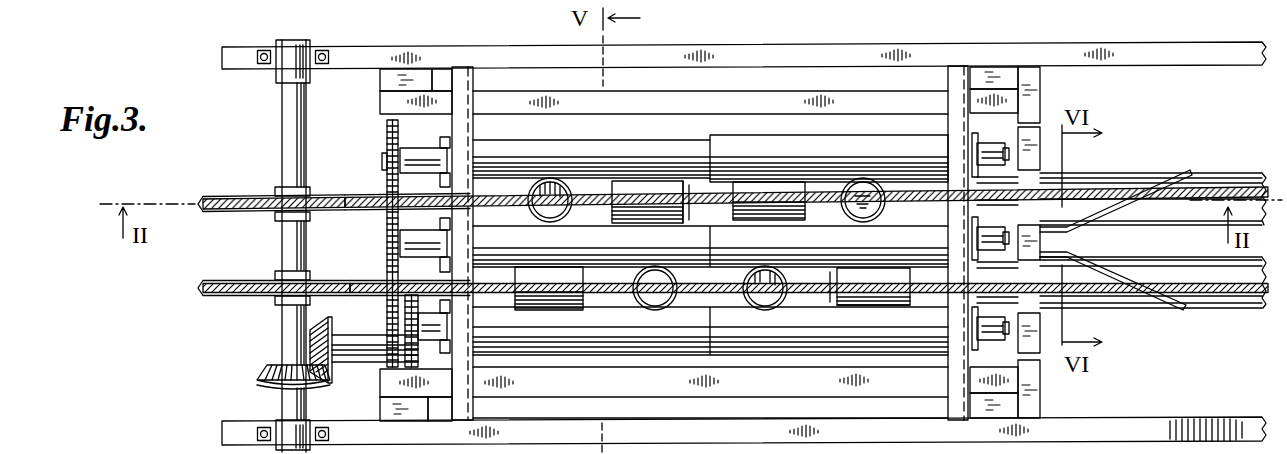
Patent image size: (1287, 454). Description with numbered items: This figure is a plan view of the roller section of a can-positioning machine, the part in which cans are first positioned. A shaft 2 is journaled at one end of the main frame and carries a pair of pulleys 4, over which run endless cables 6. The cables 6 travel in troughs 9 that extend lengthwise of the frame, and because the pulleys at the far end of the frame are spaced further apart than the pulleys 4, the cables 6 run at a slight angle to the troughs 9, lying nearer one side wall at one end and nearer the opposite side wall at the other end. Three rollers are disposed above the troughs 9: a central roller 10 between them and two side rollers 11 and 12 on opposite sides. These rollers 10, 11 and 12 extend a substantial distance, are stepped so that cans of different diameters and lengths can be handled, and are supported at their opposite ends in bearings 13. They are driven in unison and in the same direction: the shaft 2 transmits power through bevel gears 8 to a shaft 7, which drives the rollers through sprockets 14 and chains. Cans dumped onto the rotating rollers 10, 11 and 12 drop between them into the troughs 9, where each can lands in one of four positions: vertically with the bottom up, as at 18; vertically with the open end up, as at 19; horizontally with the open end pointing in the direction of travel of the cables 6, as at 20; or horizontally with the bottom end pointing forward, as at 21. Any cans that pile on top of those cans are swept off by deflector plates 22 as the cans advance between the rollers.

The shaft 2 is at (284, 118).
The pulleys 4 is at (229, 172).
The endless cables 6 is at (340, 200).
The shaft 7 is at (356, 362).
The bevel gears 8 is at (263, 366).
The troughs 9 is at (1116, 173).
The central roller 10 is at (710, 246).
The side roller 11 is at (710, 331).
The side roller 12 is at (591, 159).
The bearings 13 is at (439, 130).
The sprockets 14 is at (418, 360).
The can in bottom-up vertical position 18 is at (860, 193).
The can in open-end-up vertical position 19 is at (548, 190).
The can in horizontal position with open end forward 20 is at (755, 192).
The can in horizontal position with bottom forward 21 is at (638, 190).
The deflector plates 22 is at (1183, 172).